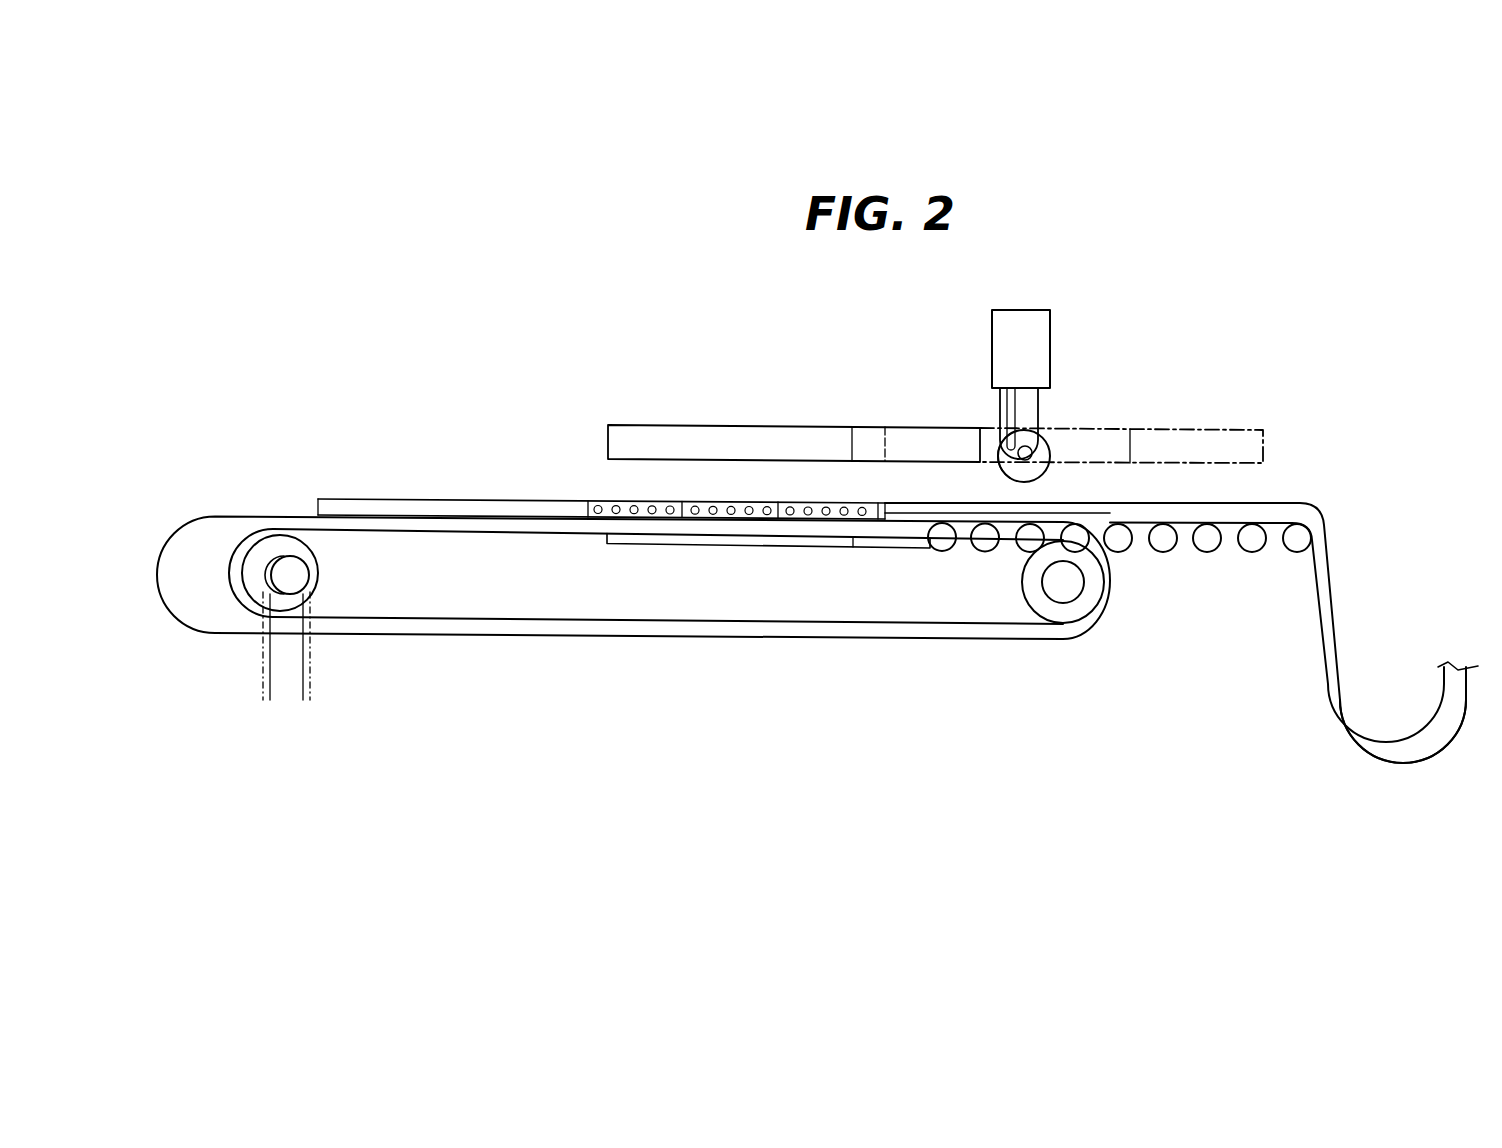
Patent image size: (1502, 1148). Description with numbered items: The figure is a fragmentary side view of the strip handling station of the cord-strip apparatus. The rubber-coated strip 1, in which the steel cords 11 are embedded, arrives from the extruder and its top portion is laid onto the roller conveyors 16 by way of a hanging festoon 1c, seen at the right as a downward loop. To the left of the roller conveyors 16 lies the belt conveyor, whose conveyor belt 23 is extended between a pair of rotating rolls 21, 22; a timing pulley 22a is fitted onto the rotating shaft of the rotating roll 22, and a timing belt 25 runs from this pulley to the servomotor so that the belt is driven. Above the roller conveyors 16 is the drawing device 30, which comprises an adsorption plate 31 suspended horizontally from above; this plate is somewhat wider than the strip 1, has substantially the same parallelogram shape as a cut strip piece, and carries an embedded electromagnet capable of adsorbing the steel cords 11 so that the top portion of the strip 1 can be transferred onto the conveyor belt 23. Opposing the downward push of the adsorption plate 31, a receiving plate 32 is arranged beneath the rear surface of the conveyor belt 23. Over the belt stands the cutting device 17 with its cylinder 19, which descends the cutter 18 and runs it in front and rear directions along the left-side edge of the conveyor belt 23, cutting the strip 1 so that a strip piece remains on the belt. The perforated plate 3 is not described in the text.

The strip 1 is at (1288, 503).
The festoon 1c is at (1393, 762).
The suction plate 3 is at (557, 499).
The steel cords 11 is at (653, 514).
The roller conveyors 16 is at (1256, 546).
The cutting device 17 is at (977, 386).
The cutter 18 is at (1045, 472).
The cylinder 19 is at (1050, 345).
The rotating roll 21 is at (1064, 618).
The rotating roll 22 is at (281, 545).
The timing pulley 22a is at (300, 576).
The conveyor belt 23 is at (508, 533).
The timing belt 25 is at (260, 660).
The drawing device 30 is at (825, 418).
The adsorption plate 31 is at (763, 424).
The receiving plate 32 is at (797, 546).